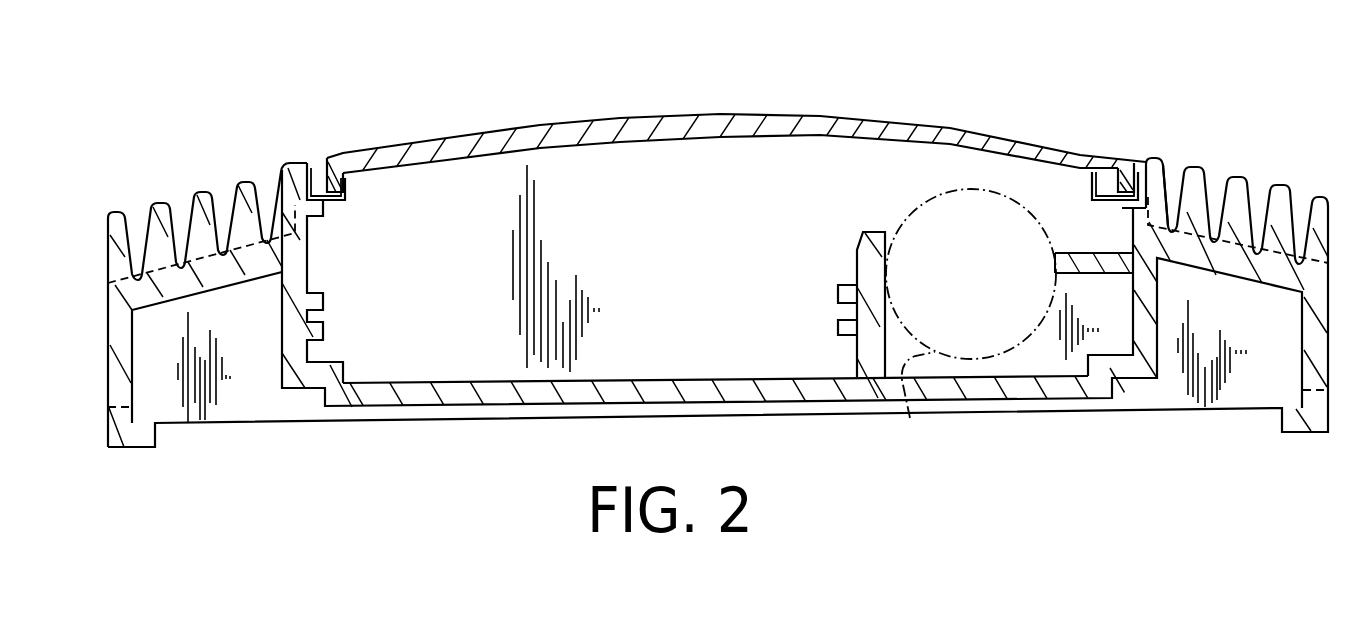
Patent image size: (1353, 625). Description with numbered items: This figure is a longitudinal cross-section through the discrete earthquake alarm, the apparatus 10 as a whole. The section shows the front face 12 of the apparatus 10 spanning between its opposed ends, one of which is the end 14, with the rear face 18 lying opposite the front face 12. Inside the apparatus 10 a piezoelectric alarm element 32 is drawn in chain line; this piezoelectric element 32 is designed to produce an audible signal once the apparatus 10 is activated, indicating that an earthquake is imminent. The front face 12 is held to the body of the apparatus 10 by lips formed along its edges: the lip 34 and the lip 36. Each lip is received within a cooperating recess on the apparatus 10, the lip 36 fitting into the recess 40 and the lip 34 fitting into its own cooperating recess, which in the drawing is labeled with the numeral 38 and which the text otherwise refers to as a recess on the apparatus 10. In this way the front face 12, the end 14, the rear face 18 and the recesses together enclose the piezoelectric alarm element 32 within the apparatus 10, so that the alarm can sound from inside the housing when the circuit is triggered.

The discrete earthquake alarm 10 is at (1288, 117).
The front face 12 is at (761, 124).
The end 14 is at (108, 338).
The rear face 18 is at (662, 393).
The piezoelectric alarm element 32 is at (910, 418).
The lip 34 is at (334, 160).
The lip 36 is at (1141, 152).
The retaining channel 38 is at (311, 172).
The recess 40 is at (1155, 150).